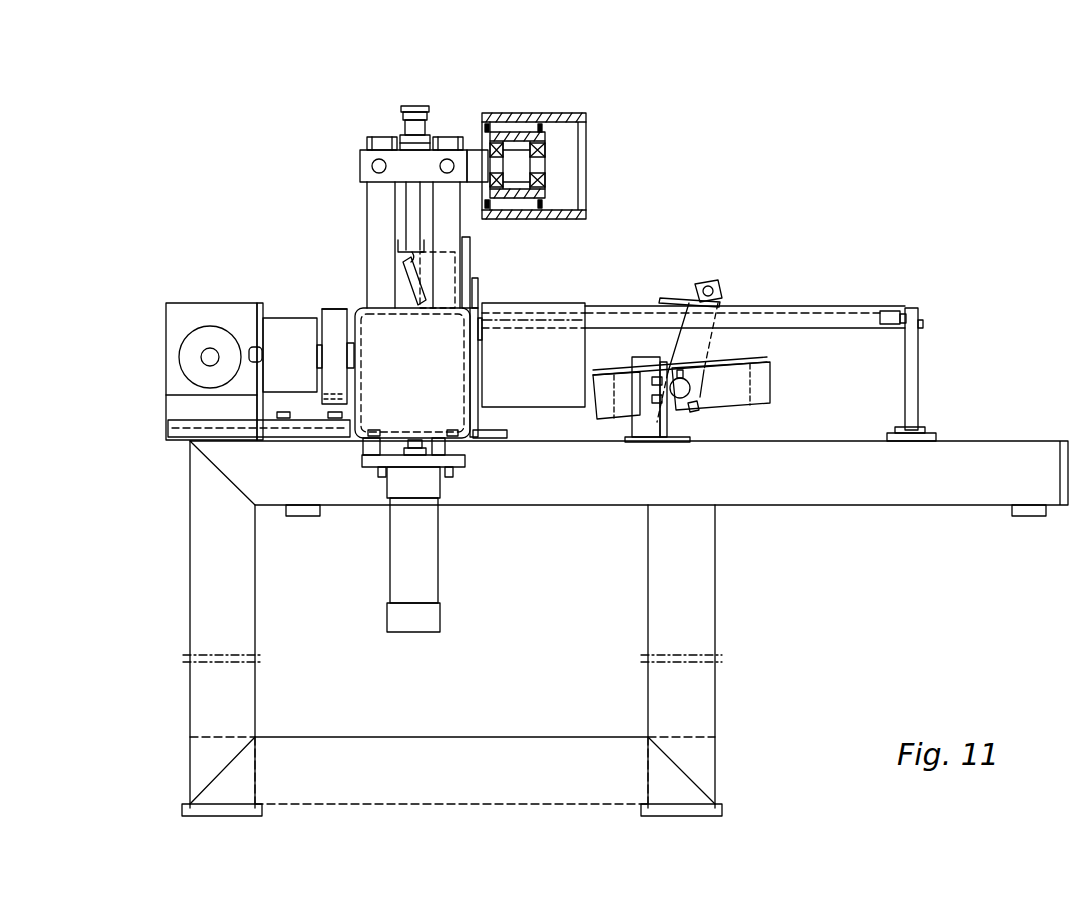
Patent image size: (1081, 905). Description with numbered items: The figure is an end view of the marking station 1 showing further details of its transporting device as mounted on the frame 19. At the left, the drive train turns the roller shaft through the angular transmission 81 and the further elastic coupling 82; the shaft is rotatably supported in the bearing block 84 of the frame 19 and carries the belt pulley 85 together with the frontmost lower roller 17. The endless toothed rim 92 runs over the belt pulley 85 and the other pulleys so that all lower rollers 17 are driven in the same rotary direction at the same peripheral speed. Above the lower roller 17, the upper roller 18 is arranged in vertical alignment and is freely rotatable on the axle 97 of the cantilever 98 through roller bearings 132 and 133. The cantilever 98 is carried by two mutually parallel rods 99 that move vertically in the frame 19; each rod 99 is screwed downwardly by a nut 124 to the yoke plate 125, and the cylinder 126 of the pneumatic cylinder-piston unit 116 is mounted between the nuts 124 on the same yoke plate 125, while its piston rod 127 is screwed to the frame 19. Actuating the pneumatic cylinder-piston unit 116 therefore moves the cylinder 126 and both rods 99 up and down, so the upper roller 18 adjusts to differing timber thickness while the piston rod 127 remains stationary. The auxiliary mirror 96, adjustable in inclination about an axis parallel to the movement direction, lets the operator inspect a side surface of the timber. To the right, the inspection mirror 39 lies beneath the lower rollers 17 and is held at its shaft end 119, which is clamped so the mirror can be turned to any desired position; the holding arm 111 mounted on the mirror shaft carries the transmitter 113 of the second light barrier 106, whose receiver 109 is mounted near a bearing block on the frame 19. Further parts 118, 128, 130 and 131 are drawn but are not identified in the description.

The marking station 1 is at (723, 195).
The lower rollers 17 is at (585, 303).
The upper rollers 18 is at (576, 113).
The frame 19 is at (178, 557).
The inspection mirror 39 is at (770, 357).
The angular transmission 81 is at (177, 312).
The further elastic coupling 82 is at (277, 323).
The bearing block 84 is at (359, 308).
The belt pulley 85 is at (323, 308).
The endless toothed rim 92 is at (335, 308).
The auxiliary mirror 96 is at (407, 257).
The axle 97 is at (537, 165).
The cantilever 98 is at (358, 155).
The rods 99 is at (368, 195).
The second light barrier 106 is at (445, 272).
The receiver 109 is at (455, 258).
The holding arm 111 is at (707, 340).
The transmitter 113 is at (699, 287).
The pneumatic cylinder-piston unit 116 is at (443, 582).
The bracket 118 is at (662, 420).
The shaft end 119 is at (690, 400).
The nut 124 is at (382, 478).
The yoke plate 125 is at (360, 460).
The cylinder 126 is at (407, 572).
The piston rod 127 is at (412, 440).
The push rod 128 is at (412, 210).
The adjusting nut 130 is at (400, 136).
The lock nut 131 is at (402, 143).
The roller bearing 132 is at (540, 180).
The roller bearing 133 is at (495, 140).